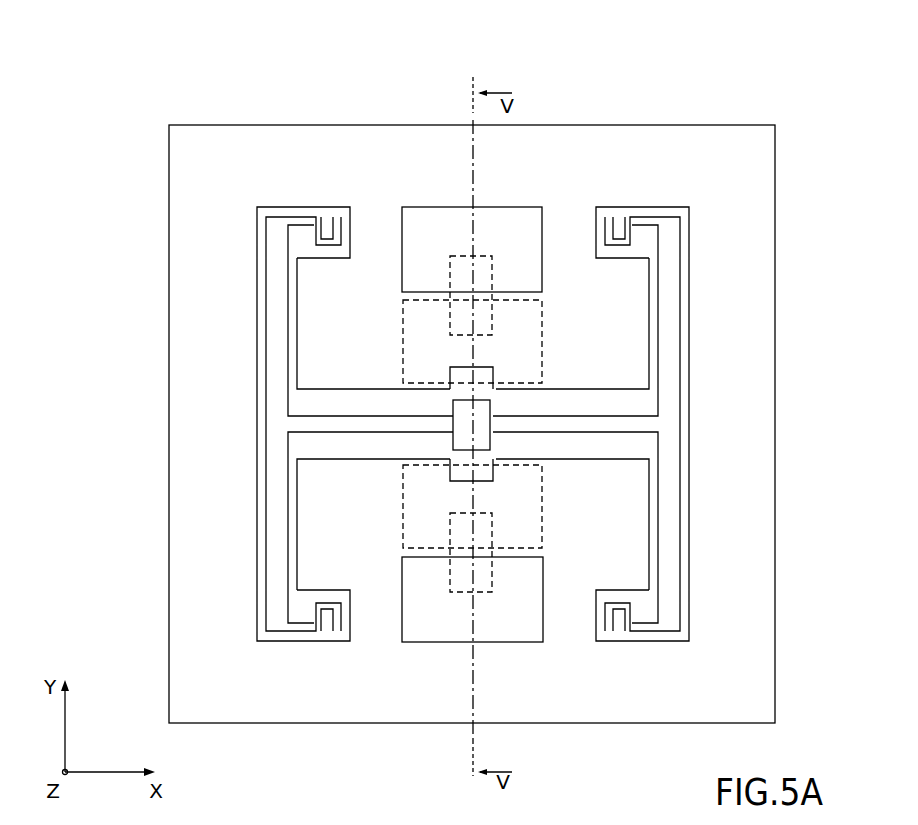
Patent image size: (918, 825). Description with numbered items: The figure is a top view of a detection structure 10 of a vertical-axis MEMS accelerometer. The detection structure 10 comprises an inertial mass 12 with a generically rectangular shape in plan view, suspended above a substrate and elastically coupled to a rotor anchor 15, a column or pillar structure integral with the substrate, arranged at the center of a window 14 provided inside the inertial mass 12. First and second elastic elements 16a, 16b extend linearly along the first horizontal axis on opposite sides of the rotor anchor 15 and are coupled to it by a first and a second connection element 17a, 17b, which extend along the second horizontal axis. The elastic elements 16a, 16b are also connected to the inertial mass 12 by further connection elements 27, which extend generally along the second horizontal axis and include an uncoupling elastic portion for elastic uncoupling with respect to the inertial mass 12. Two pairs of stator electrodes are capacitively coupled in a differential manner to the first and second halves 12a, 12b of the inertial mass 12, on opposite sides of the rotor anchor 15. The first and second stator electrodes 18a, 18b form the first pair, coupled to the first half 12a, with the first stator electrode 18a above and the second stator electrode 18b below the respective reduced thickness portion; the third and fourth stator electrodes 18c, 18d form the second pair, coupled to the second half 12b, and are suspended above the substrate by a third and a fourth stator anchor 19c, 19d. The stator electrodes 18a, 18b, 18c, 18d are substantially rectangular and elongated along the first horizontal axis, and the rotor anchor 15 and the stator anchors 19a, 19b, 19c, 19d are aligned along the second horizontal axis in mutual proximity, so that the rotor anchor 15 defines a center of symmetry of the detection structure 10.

The detection structure 10 is at (812, 172).
The inertial mass 12 is at (782, 426).
The first half of the inertial mass 12a is at (573, 332).
The second half of the inertial mass 12b is at (575, 545).
The window 14 is at (662, 209).
The rotor anchor 15 is at (487, 436).
The first elastic element 16a is at (275, 370).
The second elastic element 16b is at (668, 268).
The first connection element 17a is at (333, 420).
The second connection element 17b is at (615, 420).
The first stator electrode 18a is at (438, 223).
The second stator electrode 18b is at (410, 345).
The third stator electrode 18c is at (450, 625).
The fourth stator electrode 18d is at (410, 525).
The first stator anchor 19a is at (482, 266).
The second stator anchor 19b is at (462, 316).
The third stator anchor 19c is at (485, 582).
The fourth stator anchor 19d is at (460, 523).
The further connection element 27 is at (325, 224).